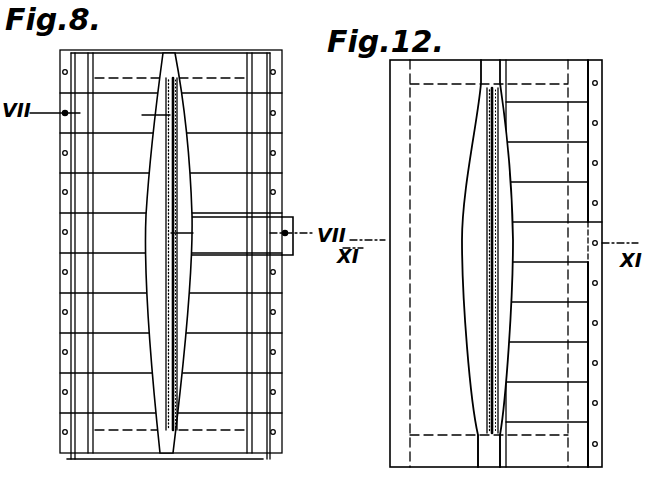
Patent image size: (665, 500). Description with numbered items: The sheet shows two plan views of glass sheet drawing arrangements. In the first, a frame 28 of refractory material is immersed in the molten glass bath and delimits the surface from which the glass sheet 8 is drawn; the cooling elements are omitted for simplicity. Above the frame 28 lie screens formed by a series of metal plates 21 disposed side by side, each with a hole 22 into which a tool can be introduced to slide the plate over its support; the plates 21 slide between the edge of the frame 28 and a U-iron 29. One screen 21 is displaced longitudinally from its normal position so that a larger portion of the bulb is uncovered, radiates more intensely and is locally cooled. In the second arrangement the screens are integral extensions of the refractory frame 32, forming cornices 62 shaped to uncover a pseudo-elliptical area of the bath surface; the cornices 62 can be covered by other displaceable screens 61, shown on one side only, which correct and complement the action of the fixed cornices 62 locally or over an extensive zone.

In FIG. 8, the glass sheet 8 is at (166, 163).
In FIG. 12, the glass sheet 8 is at (493, 182).
In FIG. 8, the metal plates 21 is at (275, 147).
In FIG. 8, the hole 22 is at (275, 111).
In FIG. 8, the frame 28 is at (238, 462).
In FIG. 8, the U-iron 29 is at (78, 303).
In FIG. 12, the refractory frame 32 is at (487, 458).
In FIG. 12, the displaceable screens 61 is at (597, 222).
In FIG. 12, the cornices 62 is at (445, 337).